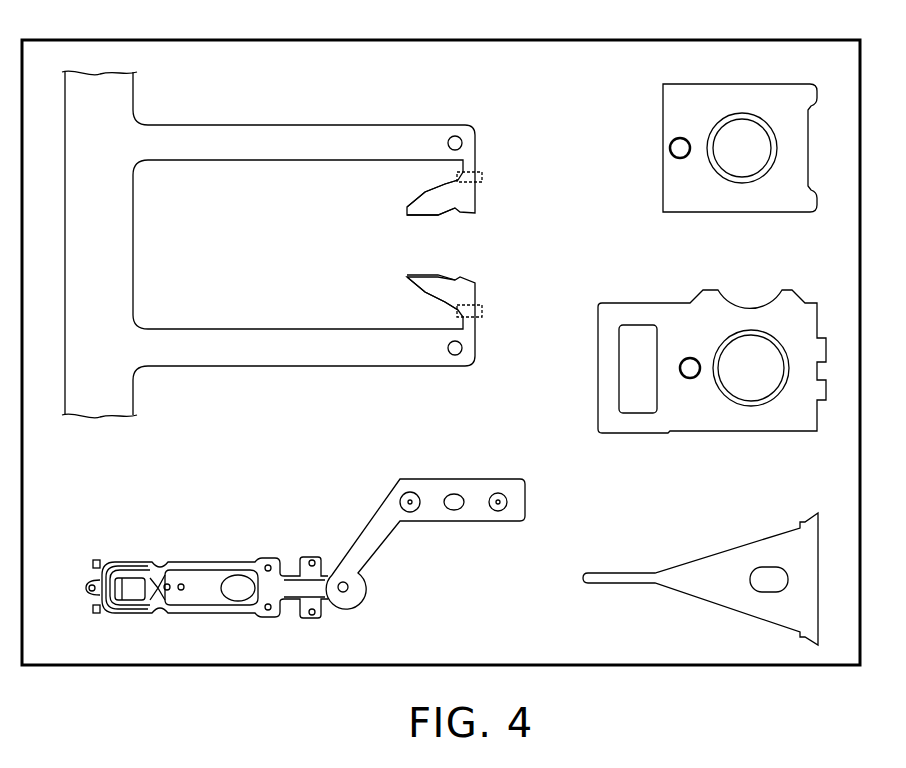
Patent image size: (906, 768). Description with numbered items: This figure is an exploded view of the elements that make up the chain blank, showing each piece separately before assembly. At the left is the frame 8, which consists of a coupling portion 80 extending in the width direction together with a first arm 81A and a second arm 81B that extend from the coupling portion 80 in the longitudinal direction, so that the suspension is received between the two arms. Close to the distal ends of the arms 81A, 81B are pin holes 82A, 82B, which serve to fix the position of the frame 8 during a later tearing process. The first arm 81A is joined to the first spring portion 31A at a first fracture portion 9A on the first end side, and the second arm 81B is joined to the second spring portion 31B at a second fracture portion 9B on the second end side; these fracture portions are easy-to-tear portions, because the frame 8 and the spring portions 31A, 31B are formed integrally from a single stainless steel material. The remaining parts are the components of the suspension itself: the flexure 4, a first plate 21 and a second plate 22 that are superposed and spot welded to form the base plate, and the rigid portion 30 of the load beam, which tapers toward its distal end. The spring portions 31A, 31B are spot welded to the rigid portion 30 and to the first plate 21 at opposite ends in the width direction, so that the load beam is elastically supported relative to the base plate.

The flexure 4 is at (430, 479).
The frame 8 is at (316, 269).
The coupling portion 80 is at (133, 247).
The first arm 81A is at (255, 366).
The second arm 81B is at (255, 125).
The pin hole 82A is at (455, 355).
The pin hole 82B is at (455, 136).
The first fracture portion 9A is at (478, 320).
The second fracture portion 9B is at (478, 160).
The first spring portion 31A is at (405, 277).
The second spring portion 31B is at (407, 207).
The first plate 21 is at (625, 303).
The second plate 22 is at (663, 175).
The rigid portion 30 is at (717, 553).